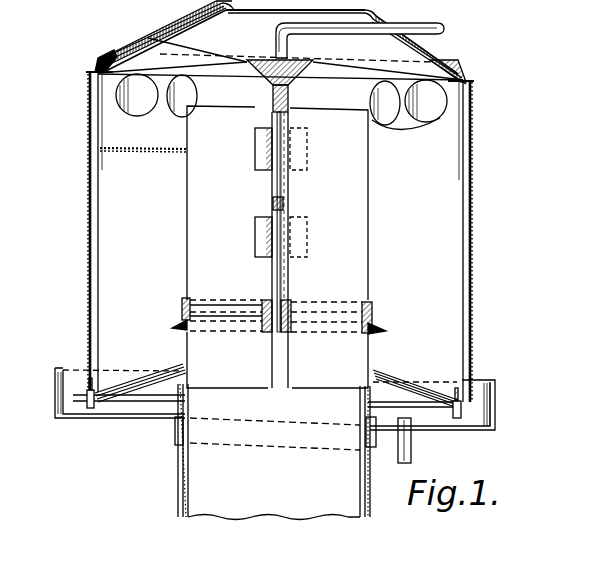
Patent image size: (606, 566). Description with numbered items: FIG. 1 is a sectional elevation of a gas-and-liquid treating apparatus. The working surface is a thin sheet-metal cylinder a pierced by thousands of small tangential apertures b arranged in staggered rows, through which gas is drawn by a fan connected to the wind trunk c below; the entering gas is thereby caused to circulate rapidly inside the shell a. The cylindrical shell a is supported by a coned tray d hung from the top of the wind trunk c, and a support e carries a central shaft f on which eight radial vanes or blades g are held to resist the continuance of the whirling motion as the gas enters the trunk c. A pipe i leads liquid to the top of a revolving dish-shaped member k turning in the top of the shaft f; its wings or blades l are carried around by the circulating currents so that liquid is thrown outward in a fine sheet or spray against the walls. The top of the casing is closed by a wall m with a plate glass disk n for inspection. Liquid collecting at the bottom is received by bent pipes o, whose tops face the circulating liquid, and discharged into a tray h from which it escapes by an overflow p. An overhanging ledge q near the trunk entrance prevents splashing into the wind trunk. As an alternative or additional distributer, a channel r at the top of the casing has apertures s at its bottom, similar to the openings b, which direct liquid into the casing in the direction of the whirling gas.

The cylindrical surface a is at (92, 170).
The apertures b is at (99, 149).
The wind trunk c is at (180, 476).
The coned tray d is at (167, 369).
The support e is at (235, 312).
The central shaft f is at (284, 205).
The radial vanes g is at (193, 213).
The tray h is at (54, 395).
The pipe i is at (438, 30).
The revolving dish-shaped member k is at (148, 38).
The wings or blades l is at (127, 98).
The wall m is at (181, 28).
The plate glass disk n is at (214, 5).
The bent pipes o is at (90, 385).
The overflow p is at (410, 447).
The overhanging ledge q is at (179, 322).
The channel r is at (102, 63).
The apertures s is at (93, 76).